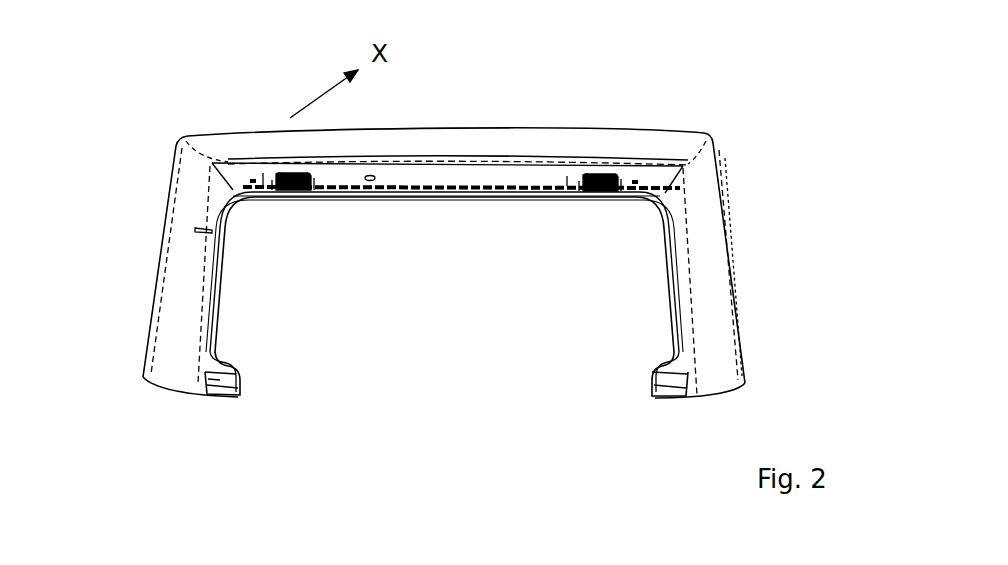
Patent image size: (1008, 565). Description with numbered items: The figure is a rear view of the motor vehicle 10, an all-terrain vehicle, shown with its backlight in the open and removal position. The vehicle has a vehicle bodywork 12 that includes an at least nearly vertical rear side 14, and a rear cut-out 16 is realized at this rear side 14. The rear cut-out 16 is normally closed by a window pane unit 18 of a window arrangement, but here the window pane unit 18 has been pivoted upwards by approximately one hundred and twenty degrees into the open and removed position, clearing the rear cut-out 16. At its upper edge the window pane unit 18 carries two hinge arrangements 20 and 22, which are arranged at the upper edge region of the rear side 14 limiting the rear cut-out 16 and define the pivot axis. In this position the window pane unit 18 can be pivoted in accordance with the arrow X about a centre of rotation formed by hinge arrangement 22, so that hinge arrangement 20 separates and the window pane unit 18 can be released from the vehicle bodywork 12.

The motor vehicle 10 is at (722, 110).
The vehicle bodywork 12 is at (168, 345).
The rear side 14 is at (702, 177).
The rear cut-out 16 is at (238, 386).
The window pane unit 18 is at (543, 178).
The hinge arrangement 20 is at (290, 192).
The hinge arrangement 22 is at (600, 194).